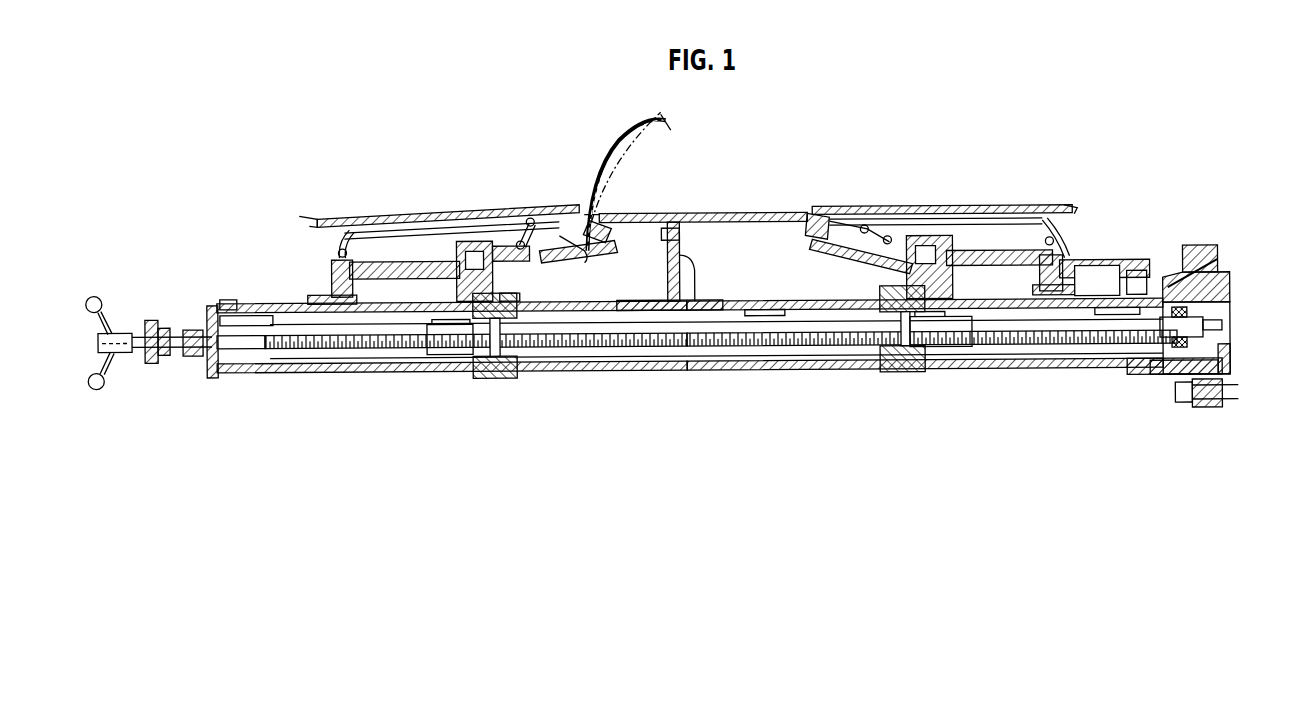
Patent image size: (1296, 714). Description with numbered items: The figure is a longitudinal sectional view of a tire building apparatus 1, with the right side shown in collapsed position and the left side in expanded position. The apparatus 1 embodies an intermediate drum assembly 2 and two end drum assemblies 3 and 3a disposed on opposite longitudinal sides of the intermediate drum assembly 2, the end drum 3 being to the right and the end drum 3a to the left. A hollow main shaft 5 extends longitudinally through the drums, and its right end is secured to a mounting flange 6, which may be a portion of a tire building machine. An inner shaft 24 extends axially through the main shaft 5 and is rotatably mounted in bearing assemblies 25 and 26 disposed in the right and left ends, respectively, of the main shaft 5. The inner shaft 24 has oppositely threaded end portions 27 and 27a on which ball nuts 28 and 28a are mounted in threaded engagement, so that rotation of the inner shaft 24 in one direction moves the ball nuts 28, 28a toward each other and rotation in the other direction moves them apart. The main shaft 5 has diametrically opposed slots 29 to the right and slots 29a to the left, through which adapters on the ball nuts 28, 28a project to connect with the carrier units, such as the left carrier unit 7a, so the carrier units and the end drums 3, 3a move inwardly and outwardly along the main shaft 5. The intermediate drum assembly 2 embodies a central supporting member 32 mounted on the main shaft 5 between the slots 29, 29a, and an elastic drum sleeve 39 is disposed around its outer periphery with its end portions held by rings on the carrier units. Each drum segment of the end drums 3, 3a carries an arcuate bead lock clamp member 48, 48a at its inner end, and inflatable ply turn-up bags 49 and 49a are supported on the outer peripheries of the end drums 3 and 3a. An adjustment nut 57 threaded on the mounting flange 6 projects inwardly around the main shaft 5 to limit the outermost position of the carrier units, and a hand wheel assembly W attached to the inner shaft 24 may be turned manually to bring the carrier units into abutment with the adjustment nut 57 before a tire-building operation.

The tire building apparatus 1 is at (1220, 245).
The hand wheel assembly W is at (96, 293).
The intermediate drum assembly 2 is at (768, 213).
The end drum assembly 3 is at (960, 208).
The end drum assembly 3a is at (405, 215).
The main shaft 5 is at (1080, 370).
The mounting flange 6 is at (1222, 280).
The carrier unit 7a is at (330, 270).
The inner shaft 24 is at (674, 338).
The bearing assembly 25 is at (1228, 318).
The bearing assembly 26 is at (209, 308).
The threaded end portion 27 is at (1015, 346).
The threaded end portion 27a is at (322, 348).
The ball nut 28 is at (884, 352).
The ball nut 28a is at (488, 358).
The slot 29 is at (778, 301).
The slot 29a is at (576, 301).
The central supporting member 32 is at (690, 278).
The elastic drum sleeve 39 is at (608, 135).
The bead lock clamp member 48 is at (820, 214).
The bead lock clamp member 48a is at (575, 200).
The inflatable ply turn-up bag 49 is at (1066, 209).
The inflatable ply turn-up bag 49a is at (312, 218).
The adjustment nut 57 is at (1128, 262).